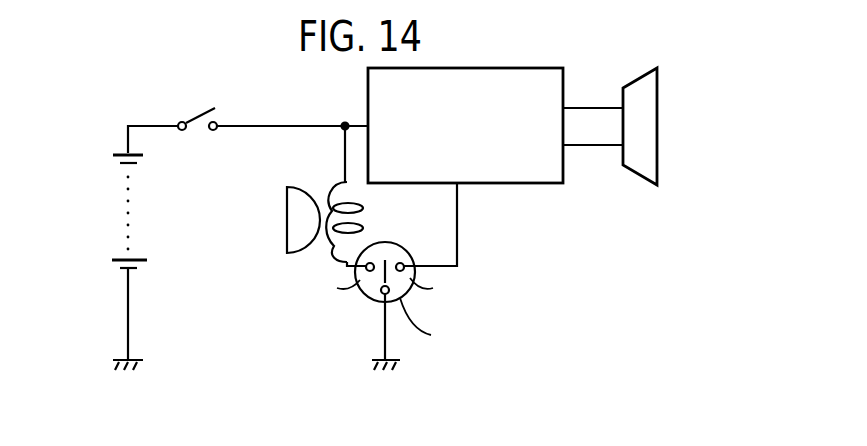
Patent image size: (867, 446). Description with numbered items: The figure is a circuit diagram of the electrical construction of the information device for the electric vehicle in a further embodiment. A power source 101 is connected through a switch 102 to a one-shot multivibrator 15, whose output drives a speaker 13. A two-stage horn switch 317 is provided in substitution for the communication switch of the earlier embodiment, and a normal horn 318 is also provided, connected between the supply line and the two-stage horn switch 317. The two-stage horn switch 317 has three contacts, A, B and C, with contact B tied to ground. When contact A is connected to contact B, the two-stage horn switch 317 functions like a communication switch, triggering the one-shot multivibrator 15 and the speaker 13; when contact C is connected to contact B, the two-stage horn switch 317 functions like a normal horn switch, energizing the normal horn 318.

The speaker horn 13 is at (657, 150).
The one-shot multivibrator 15 is at (503, 183).
The battery 101 is at (120, 165).
The switch 102 is at (203, 110).
The two-stage horn switch 317 is at (364, 292).
The normal horn 318 is at (283, 221).